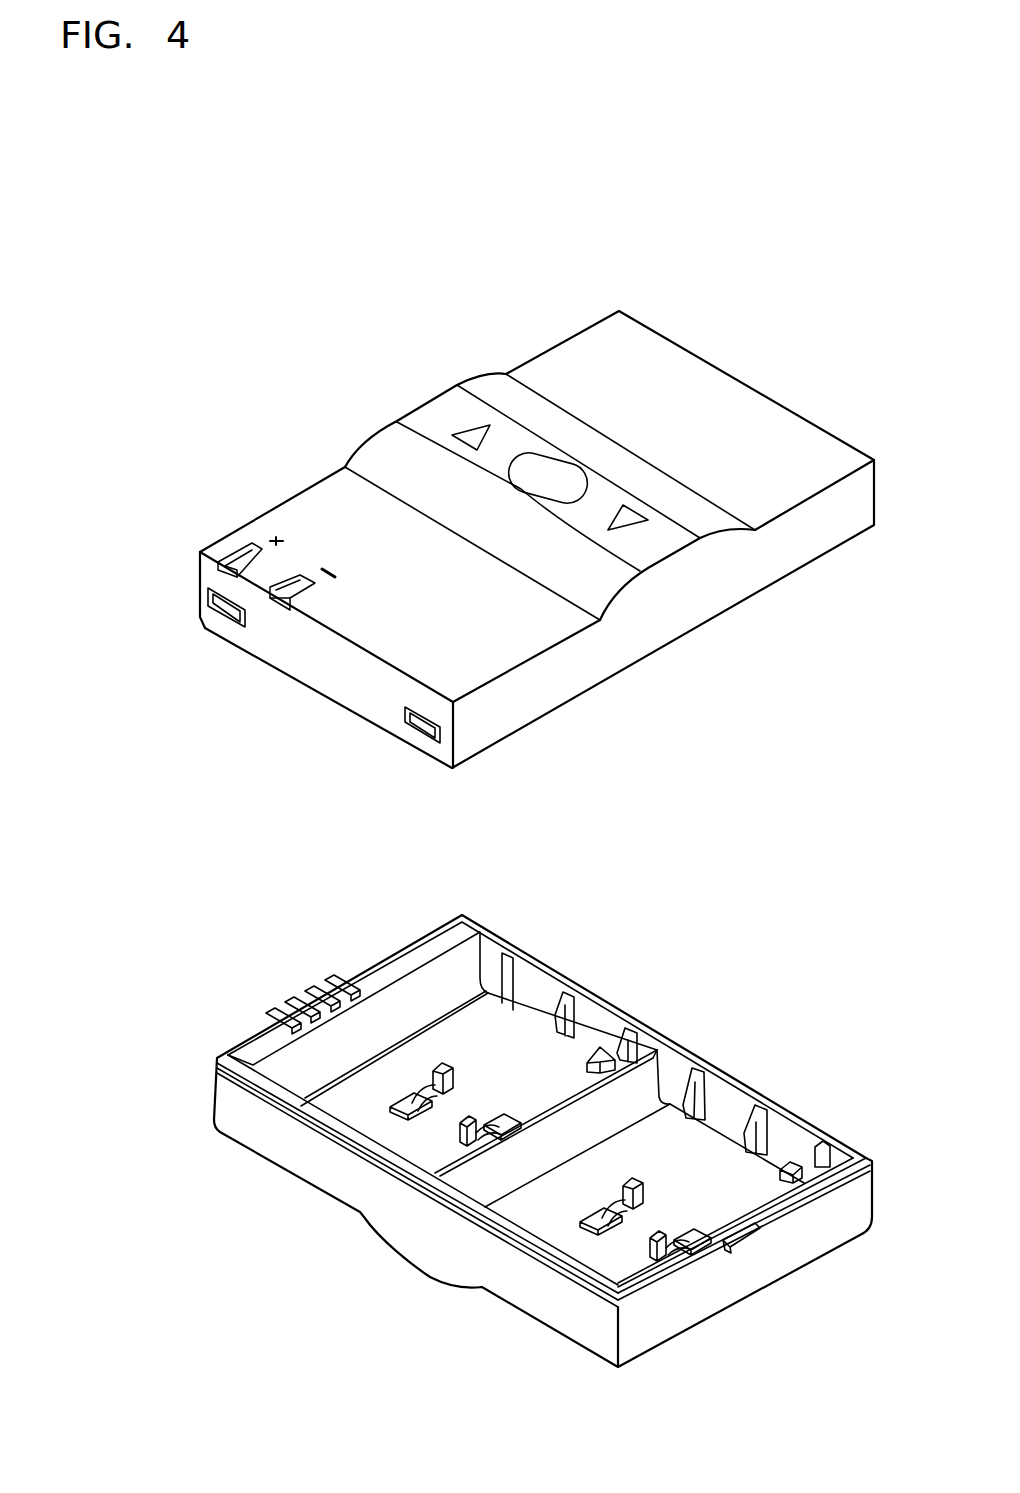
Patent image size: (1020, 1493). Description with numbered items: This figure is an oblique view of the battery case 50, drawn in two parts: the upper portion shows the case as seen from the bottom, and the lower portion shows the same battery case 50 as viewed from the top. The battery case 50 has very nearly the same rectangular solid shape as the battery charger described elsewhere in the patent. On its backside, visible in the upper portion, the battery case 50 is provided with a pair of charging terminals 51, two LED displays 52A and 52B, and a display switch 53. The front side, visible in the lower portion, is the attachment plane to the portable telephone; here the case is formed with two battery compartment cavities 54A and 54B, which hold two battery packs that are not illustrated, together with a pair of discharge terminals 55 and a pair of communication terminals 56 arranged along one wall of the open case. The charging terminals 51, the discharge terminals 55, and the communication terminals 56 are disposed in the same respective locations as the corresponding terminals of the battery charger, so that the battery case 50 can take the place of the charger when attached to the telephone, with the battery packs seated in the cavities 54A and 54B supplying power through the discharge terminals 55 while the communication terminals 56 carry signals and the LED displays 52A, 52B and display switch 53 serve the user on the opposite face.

The battery case 50 is at (566, 338).
The charging terminals 51 is at (244, 562).
The LED display 52A is at (474, 435).
The LED display 52B is at (630, 519).
The display switch 53 is at (521, 489).
The battery compartment cavity 54A is at (730, 1100).
The battery compartment cavity 54B is at (537, 981).
The discharge terminals 55 is at (283, 1022).
The communication terminals 56 is at (332, 996).